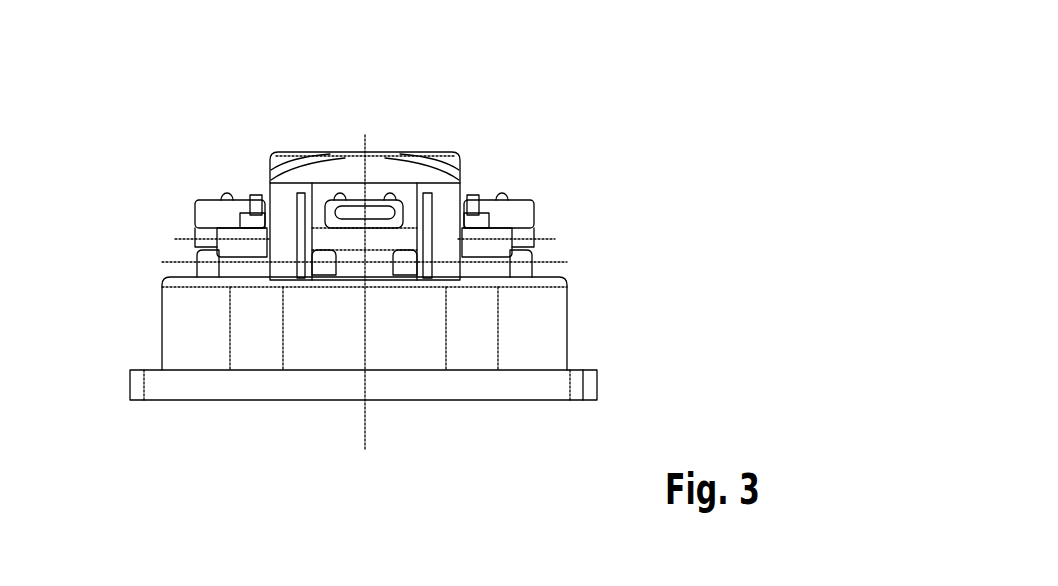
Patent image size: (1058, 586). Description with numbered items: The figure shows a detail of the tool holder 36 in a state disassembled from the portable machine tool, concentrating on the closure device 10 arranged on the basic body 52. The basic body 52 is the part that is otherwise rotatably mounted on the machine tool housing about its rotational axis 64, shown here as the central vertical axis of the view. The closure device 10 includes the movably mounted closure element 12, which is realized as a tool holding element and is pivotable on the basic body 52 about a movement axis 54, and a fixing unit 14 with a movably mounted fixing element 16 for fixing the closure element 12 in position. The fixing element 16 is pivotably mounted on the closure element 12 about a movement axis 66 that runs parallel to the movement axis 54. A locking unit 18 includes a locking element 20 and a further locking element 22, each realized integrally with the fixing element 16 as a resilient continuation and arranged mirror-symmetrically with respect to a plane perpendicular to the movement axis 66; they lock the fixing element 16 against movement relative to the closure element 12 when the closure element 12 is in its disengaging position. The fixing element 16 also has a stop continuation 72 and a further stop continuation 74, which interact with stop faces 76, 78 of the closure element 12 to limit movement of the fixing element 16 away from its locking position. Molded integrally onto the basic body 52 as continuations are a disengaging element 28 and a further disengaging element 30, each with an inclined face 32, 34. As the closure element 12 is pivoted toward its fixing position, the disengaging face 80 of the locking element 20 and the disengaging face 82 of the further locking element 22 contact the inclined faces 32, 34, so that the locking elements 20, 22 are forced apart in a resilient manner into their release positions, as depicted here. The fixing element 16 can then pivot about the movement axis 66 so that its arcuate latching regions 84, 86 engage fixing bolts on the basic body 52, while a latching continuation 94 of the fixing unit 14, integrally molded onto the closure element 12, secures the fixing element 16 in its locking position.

The closure device 10 is at (140, 93).
The closure element 12 is at (218, 205).
The fixing unit 14 is at (512, 126).
The fixing element 16 is at (441, 207).
The locking unit 18 is at (522, 170).
The locking element 20 is at (317, 215).
The further locking element 22 is at (412, 207).
The disengaging element 28 is at (333, 268).
The further disengaging element 30 is at (406, 265).
The inclined face 32 is at (300, 259).
The inclined face 34 is at (422, 254).
The tool holder 36 is at (667, 42).
The basic body 52 is at (575, 387).
The movement axis 54 is at (570, 263).
The rotational axis 64 is at (368, 447).
The movement axis 66 is at (550, 240).
The stop continuation 72 is at (260, 236).
The further stop continuation 74 is at (477, 233).
The stop face 76 is at (253, 206).
The stop face 78 is at (484, 207).
The disengaging face 80 is at (318, 262).
The disengaging face 82 is at (466, 303).
The latching region 84 is at (262, 303).
The latching region 86 is at (418, 262).
The latching continuation 94 is at (354, 212).